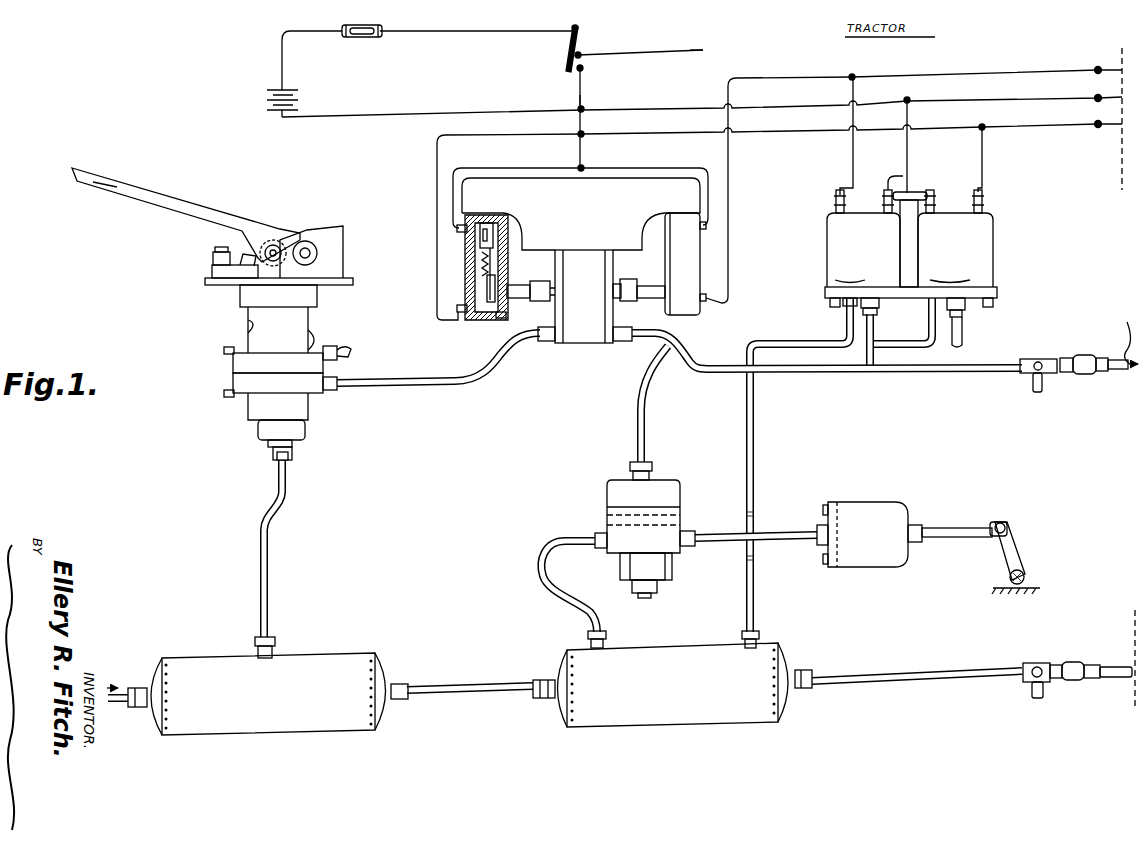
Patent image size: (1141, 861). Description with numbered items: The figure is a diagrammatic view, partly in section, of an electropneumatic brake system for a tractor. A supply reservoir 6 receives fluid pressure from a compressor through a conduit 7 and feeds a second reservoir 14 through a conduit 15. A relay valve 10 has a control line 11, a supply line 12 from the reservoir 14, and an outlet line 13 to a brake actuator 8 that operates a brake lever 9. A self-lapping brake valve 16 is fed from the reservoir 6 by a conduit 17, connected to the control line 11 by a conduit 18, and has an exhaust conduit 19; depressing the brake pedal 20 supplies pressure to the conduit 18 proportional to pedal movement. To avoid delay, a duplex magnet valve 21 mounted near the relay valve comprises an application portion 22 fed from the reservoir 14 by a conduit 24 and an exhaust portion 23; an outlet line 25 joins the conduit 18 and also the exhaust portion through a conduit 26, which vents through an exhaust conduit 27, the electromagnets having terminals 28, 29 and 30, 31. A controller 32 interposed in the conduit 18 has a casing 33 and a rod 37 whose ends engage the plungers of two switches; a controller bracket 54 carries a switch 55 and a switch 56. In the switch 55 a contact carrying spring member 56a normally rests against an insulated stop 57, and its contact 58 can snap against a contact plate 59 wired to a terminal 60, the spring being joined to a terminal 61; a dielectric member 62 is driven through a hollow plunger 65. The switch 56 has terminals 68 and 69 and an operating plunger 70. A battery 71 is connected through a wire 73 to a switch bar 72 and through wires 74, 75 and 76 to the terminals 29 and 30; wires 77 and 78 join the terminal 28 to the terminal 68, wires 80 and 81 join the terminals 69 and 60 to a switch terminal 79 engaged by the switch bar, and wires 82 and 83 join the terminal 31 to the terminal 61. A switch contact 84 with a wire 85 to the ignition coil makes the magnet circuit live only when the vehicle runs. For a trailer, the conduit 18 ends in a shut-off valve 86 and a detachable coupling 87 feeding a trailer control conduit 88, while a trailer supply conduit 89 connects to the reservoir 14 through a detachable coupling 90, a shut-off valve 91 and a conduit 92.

The supply reservoir 6 is at (338, 657).
The conduit 7 is at (128, 688).
The brake actuator 8 is at (908, 507).
The brake lever 9 is at (1014, 551).
The relay valve 10 is at (676, 491).
The control line 11 is at (645, 432).
The supply line 12 is at (555, 600).
The outlet line 13 is at (784, 533).
The second reservoir 14 is at (690, 647).
The conduit 15 is at (475, 681).
The brake valve 16 is at (314, 339).
The conduit 17 is at (290, 503).
The conduit 18 is at (412, 385).
The exhaust conduit 19 is at (348, 359).
The brake pedal 20 is at (212, 212).
The magnet valve 21 is at (911, 235).
The application portion 22 is at (828, 261).
The exhaust portion 23 is at (993, 255).
The conduit 24 is at (784, 340).
The outlet line 25 is at (878, 318).
The conduit 26 is at (909, 342).
The exhaust conduit 27 is at (962, 331).
The terminal 28 is at (835, 210).
The terminal 29 is at (882, 200).
The terminal 30 is at (935, 197).
The terminal 31 is at (985, 195).
The controller 32 is at (578, 267).
The casing 33 is at (572, 343).
The rod 37 is at (617, 282).
The controller bracket 54 is at (530, 248).
The switch 55 is at (471, 290).
The switch 56 is at (690, 309).
The contact carrying spring member 56a is at (490, 275).
The stop 57 is at (483, 240).
The contact 58 is at (480, 252).
The contact plate 59 is at (480, 235).
The terminal 60 is at (458, 228).
The terminal 61 is at (459, 310).
The member 62 is at (497, 318).
The hollow plunger 65 is at (535, 299).
The terminal 68 is at (710, 297).
The terminal 69 is at (710, 227).
The operating plunger 70 is at (637, 297).
The battery 71 is at (300, 101).
The switch bar 72 is at (572, 48).
The wire 73 is at (513, 31).
The wire 74 is at (465, 115).
The wire 75 is at (909, 146).
The wire 76 is at (900, 176).
The wire 77 is at (851, 154).
The wire 78 is at (812, 69).
The switch terminal 79 is at (585, 70).
The wire 80 is at (657, 166).
The wire 81 is at (585, 98).
The wire 82 is at (985, 150).
The wire 83 is at (430, 145).
The switch contact 84 is at (583, 53).
The wire 85 is at (663, 51).
The shut-off valve 86 is at (1047, 345).
The detachable coupling 87 is at (1075, 357).
The control conduit 88 is at (1114, 374).
The supply conduit 89 is at (1115, 667).
The detachable coupling 90 is at (1083, 650).
The shut-off valve 91 is at (1043, 655).
The conduit 92 is at (937, 669).